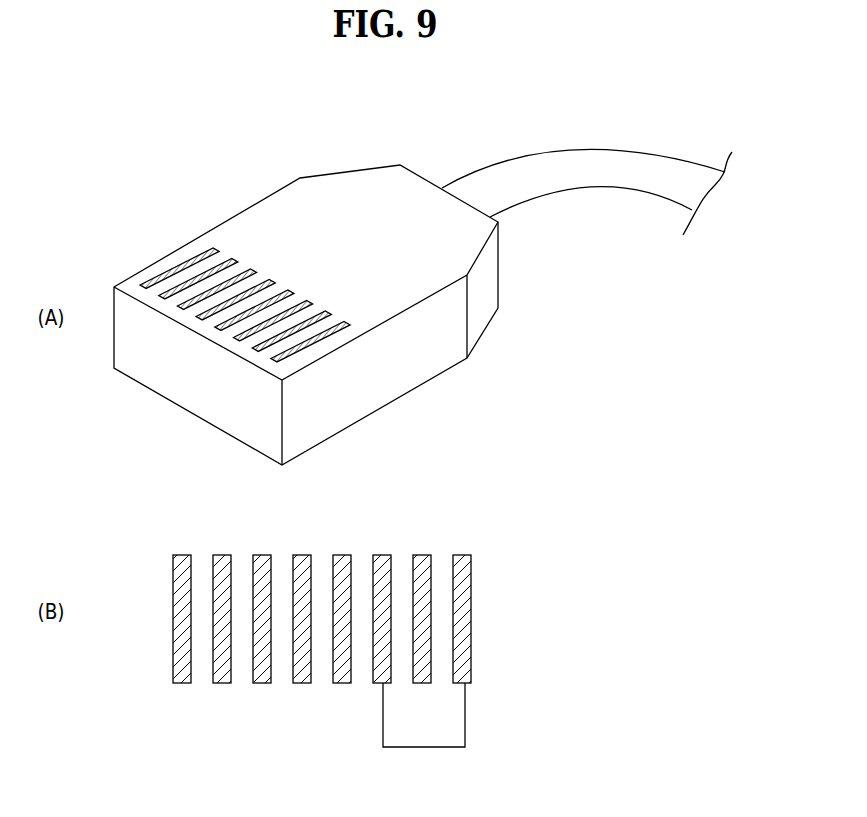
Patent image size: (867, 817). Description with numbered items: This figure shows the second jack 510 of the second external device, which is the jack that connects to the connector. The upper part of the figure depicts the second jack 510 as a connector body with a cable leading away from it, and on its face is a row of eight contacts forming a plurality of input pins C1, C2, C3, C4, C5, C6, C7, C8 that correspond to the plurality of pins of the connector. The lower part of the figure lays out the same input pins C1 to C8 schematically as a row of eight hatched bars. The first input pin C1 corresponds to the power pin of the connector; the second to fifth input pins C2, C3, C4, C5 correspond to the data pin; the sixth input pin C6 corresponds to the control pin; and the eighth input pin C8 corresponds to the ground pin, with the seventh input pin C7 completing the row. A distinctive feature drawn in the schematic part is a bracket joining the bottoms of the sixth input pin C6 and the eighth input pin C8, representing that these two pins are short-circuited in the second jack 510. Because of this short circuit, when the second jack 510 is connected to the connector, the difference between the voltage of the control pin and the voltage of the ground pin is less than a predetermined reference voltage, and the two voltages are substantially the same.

The second jack 510 is at (243, 211).
The first input pin C1 is at (190, 457).
The second input pin C2 is at (209, 462).
The third input pin C3 is at (227, 467).
The fourth input pin C4 is at (254, 473).
The fifth input pin C5 is at (284, 478).
The sixth input pin C6 is at (314, 483).
The seventh input pin C7 is at (342, 488).
The eighth input pin C8 is at (372, 494).